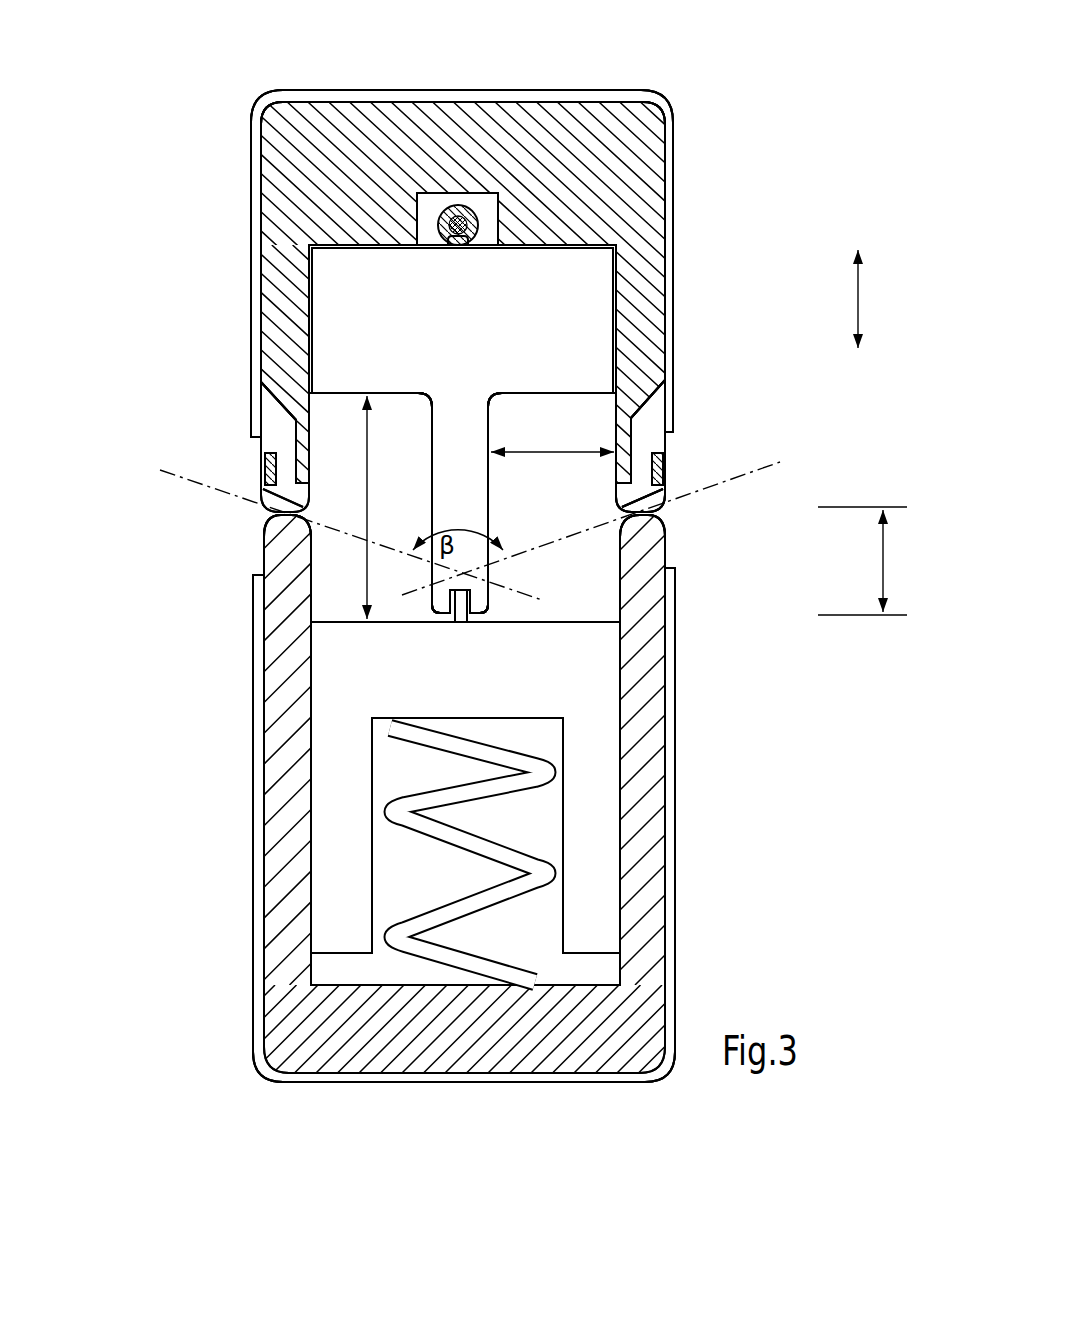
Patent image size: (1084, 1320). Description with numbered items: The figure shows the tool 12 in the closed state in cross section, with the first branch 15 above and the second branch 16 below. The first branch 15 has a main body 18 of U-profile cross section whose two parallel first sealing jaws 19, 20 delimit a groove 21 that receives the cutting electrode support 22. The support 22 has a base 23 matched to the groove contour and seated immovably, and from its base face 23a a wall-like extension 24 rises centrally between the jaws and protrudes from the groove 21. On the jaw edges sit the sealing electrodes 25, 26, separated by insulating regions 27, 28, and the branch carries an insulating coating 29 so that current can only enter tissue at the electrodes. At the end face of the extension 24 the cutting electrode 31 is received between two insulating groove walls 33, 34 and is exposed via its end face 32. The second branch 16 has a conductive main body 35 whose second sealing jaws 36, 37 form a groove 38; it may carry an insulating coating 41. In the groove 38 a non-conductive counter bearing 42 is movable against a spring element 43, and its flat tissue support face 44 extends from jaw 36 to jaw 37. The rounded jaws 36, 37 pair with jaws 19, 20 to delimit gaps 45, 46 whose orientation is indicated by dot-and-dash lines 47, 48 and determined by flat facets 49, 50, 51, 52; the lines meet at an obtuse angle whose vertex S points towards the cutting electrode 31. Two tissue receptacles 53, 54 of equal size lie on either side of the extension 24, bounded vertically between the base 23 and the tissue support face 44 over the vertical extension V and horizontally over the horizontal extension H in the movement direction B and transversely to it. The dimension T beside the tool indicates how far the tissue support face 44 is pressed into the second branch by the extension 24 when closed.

The tool 12 is at (835, 110).
The first branch 15 is at (728, 228).
The second branch 16 is at (735, 817).
The main body 18 is at (565, 148).
The first sealing jaw 19 is at (287, 310).
The first sealing jaw 20 is at (648, 343).
The groove 21 is at (617, 428).
The cutting electrode support 22 is at (417, 425).
The base 23 is at (451, 322).
The base face 23a is at (340, 393).
The wall-like extension 24 is at (446, 502).
The sealing electrode 25 is at (308, 475).
The sealing electrode 26 is at (636, 494).
The insulating region 27 is at (267, 500).
The insulating region 28 is at (662, 503).
The insulating coating 29 is at (668, 202).
The cutting electrode 31 is at (488, 592).
The end face 32 is at (462, 622).
The groove wall 33 is at (437, 602).
The groove wall 34 is at (493, 598).
The main body 35 is at (500, 1015).
The second sealing jaw 36 is at (290, 623).
The second sealing jaw 37 is at (639, 663).
The groove 38 is at (597, 600).
The insulating coating 41 is at (676, 755).
The counter bearing 42 is at (439, 703).
The spring element 43 is at (453, 910).
The tissue support face 44 is at (340, 607).
The gap 45 is at (250, 513).
The gap 46 is at (667, 505).
The dot-and-dash line 47 is at (193, 484).
The dot-and-dash line 48 is at (735, 473).
The flat facet 49 is at (312, 510).
The flat facet 50 is at (268, 540).
The flat facet 51 is at (620, 504).
The flat facet 52 is at (665, 532).
The tissue receptacle 53 is at (328, 445).
The tissue receptacle 54 is at (521, 485).
The vertical extension V is at (379, 507).
The horizontal extension H is at (552, 437).
The movement direction B is at (868, 299).
The dimension T is at (862, 561).
The point of intersection S is at (457, 570).